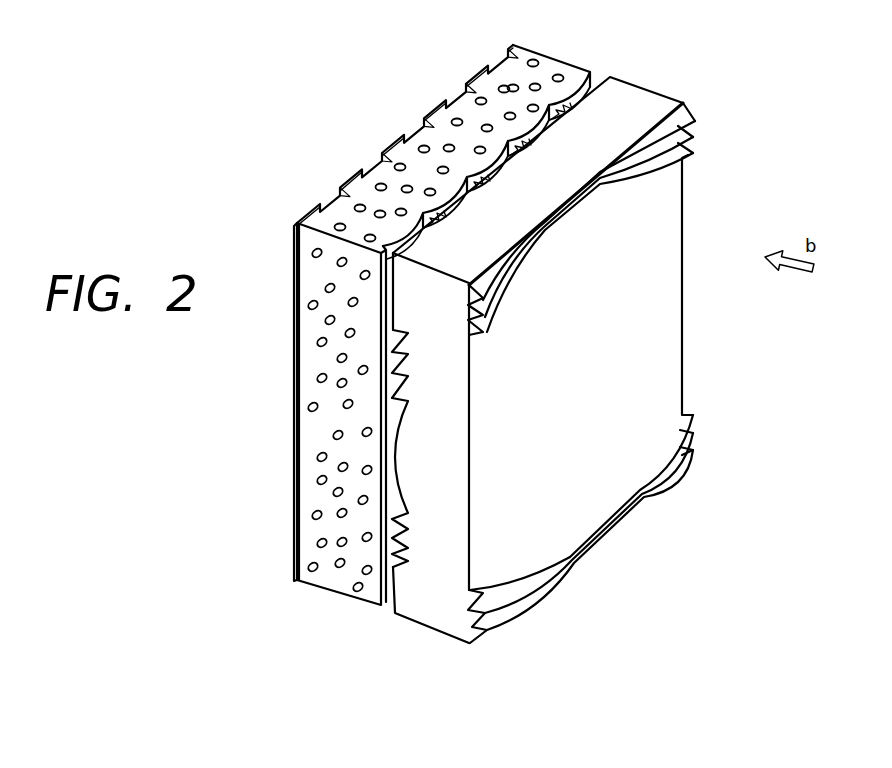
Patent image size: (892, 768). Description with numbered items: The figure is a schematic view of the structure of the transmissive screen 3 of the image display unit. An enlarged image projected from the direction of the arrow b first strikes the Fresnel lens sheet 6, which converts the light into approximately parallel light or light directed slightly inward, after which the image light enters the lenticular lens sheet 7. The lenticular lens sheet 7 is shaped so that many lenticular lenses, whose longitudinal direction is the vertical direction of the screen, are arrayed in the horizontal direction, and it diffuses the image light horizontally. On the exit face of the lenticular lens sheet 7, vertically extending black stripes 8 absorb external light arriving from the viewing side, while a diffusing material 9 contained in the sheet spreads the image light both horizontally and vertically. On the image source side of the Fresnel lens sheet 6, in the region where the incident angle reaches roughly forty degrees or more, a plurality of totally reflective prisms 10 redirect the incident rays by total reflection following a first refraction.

The transmissive screen 3 is at (488, 366).
The Fresnel lens sheet 6 is at (537, 381).
The lenticular lens sheet 7 is at (447, 342).
The black stripes 8 is at (473, 73).
The diffusing material 9 is at (559, 75).
The totally reflective prisms 10 is at (695, 130).